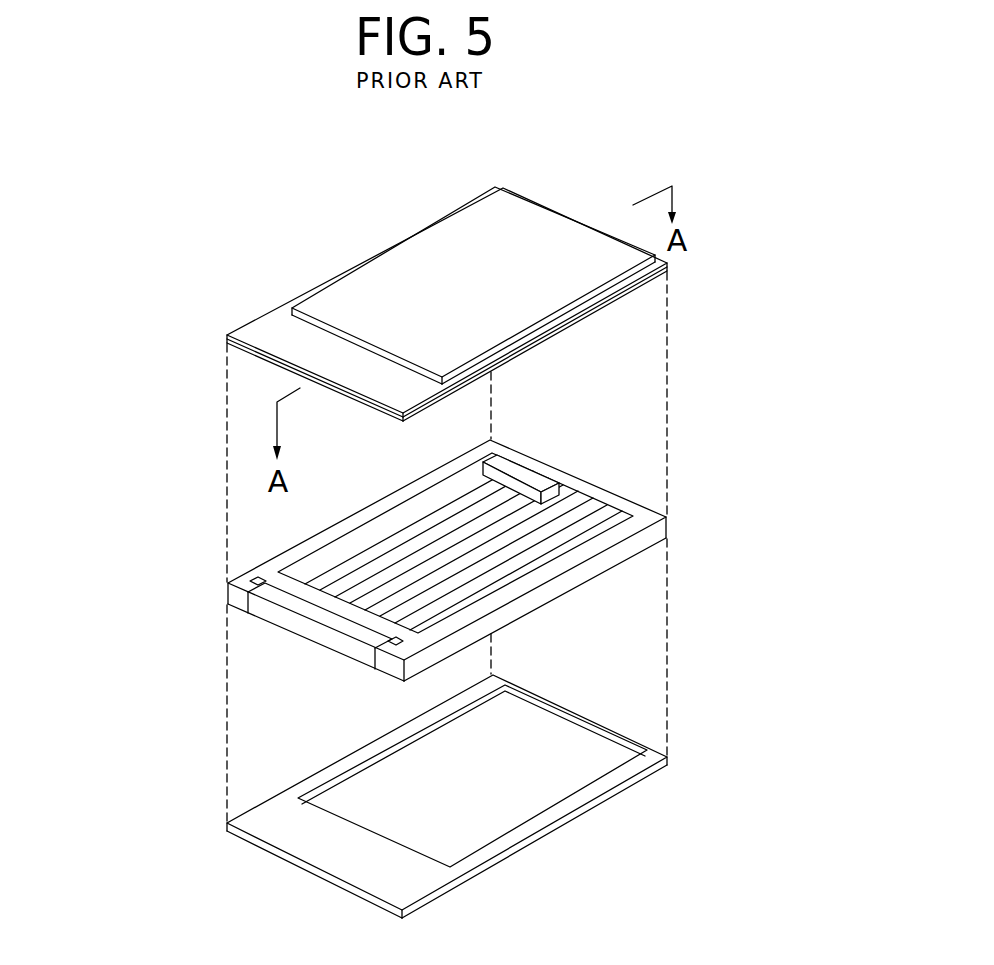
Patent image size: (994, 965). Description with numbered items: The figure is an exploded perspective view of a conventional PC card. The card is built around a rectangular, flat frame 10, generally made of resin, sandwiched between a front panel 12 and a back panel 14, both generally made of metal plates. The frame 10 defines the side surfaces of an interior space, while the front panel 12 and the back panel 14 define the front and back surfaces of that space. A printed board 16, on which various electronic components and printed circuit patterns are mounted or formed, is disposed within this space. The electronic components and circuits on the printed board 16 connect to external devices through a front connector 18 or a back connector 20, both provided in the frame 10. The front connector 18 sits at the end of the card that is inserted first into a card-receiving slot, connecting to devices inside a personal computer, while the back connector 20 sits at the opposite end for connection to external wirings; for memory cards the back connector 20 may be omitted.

The frame 10 is at (205, 590).
The front panel 12 is at (207, 338).
The back panel 14 is at (240, 855).
The printed board 16 is at (330, 567).
The front connector 18 is at (290, 622).
The back connector 20 is at (523, 473).